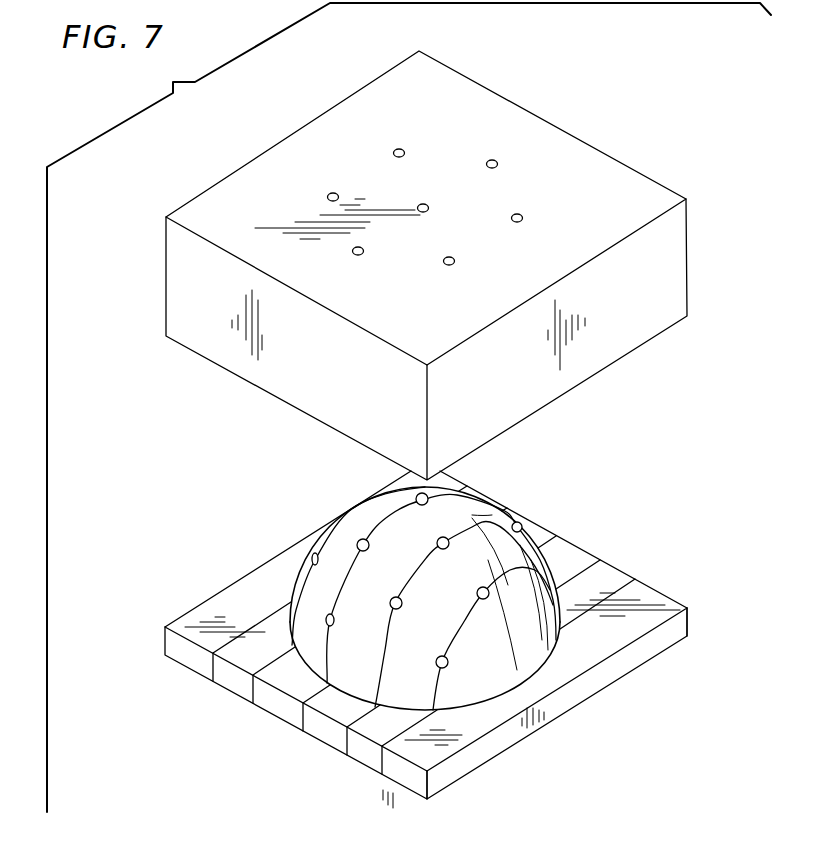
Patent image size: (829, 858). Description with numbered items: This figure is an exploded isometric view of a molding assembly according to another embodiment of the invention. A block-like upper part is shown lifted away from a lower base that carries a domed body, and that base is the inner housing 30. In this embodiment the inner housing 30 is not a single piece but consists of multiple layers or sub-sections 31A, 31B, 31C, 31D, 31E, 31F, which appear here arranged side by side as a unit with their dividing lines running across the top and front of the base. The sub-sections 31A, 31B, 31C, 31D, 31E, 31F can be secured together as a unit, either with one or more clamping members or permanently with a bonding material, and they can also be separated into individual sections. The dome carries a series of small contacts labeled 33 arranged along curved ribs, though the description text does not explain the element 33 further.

The inner housing 30 is at (410, 642).
The sub-section 31A is at (192, 657).
The sub-section 31B is at (232, 679).
The sub-section 31C is at (284, 709).
The sub-section 31D is at (328, 729).
The sub-section 31E is at (364, 749).
The sub-section 31F is at (450, 776).
The electrode contact 33 is at (360, 540).